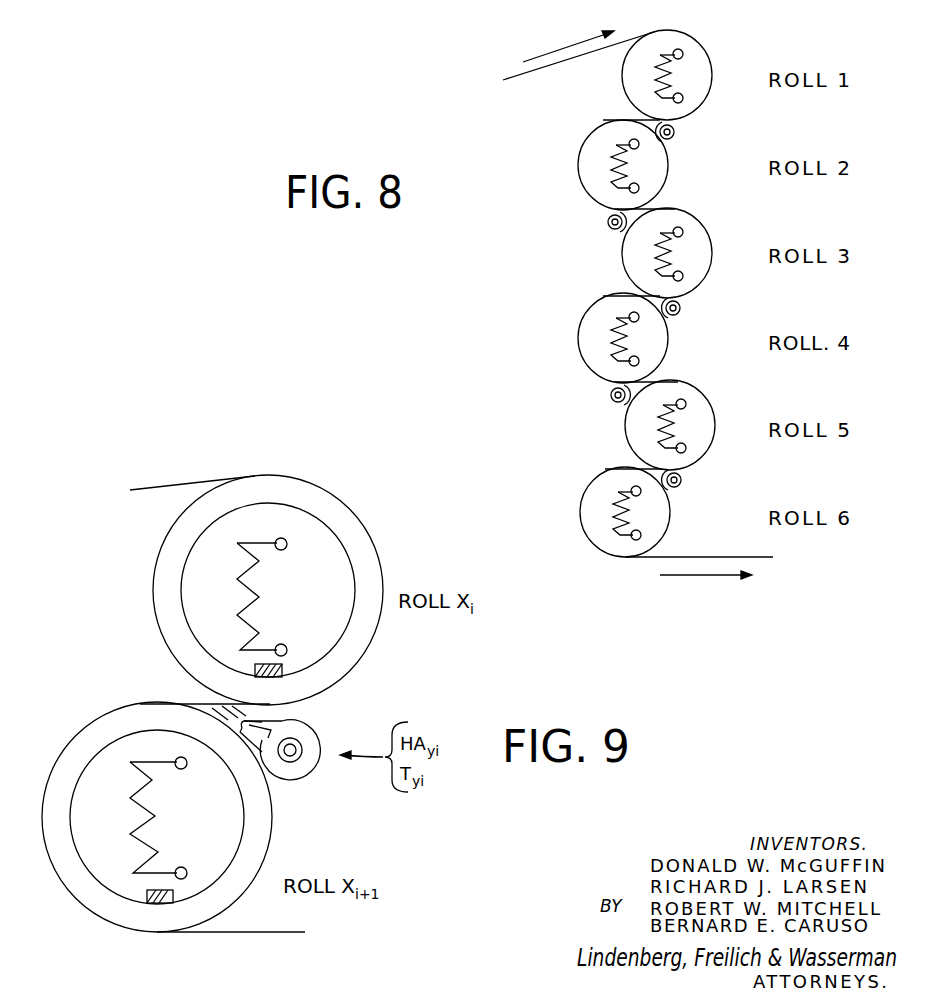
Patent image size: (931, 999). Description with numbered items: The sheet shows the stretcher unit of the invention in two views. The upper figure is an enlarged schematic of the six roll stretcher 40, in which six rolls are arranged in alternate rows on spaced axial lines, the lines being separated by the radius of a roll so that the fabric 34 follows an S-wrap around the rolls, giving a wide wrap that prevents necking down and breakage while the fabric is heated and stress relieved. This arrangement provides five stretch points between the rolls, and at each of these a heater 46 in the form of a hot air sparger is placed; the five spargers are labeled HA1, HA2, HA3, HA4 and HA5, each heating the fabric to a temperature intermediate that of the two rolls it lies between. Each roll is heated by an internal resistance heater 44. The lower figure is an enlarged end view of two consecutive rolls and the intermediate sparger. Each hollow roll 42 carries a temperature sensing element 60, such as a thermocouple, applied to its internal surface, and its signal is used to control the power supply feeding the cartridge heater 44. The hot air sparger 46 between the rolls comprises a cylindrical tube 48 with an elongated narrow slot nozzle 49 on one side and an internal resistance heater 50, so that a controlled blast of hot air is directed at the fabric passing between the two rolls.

In FIG. 8, the web 34 is at (547, 67).
In FIG. 8, the six roll stretcher 40 is at (572, 267).
In FIG. 8, the hollow roll 42 is at (711, 82).
In FIG. 8, the internal resistance heater 44 is at (670, 72).
In FIG. 9, the internal resistance heater 44 is at (253, 542).
In FIG. 8, the hot air sparger 46 is at (695, 165).
In FIG. 9, the hot air sparger 46 is at (285, 795).
In FIG. 8, the cylindrical tube 48 is at (696, 497).
In FIG. 9, the cylindrical tube 48 is at (318, 738).
In FIG. 8, the slot nozzle 49 is at (598, 407).
In FIG. 9, the slot nozzle 49 is at (273, 719).
In FIG. 8, the internal resistance heater 50 is at (695, 324).
In FIG. 9, the internal resistance heater 50 is at (297, 756).
In FIG. 9, the temperature sensing element 60 is at (282, 675).
In FIG. 8, the hot air sparger 1 HA1 is at (690, 136).
In FIG. 8, the hot air sparger 2 HA2 is at (596, 218).
In FIG. 8, the hot air sparger 3 HA3 is at (669, 318).
In FIG. 8, the hot air sparger 4 HA4 is at (628, 398).
In FIG. 8, the hot air sparger 5 HA5 is at (696, 481).